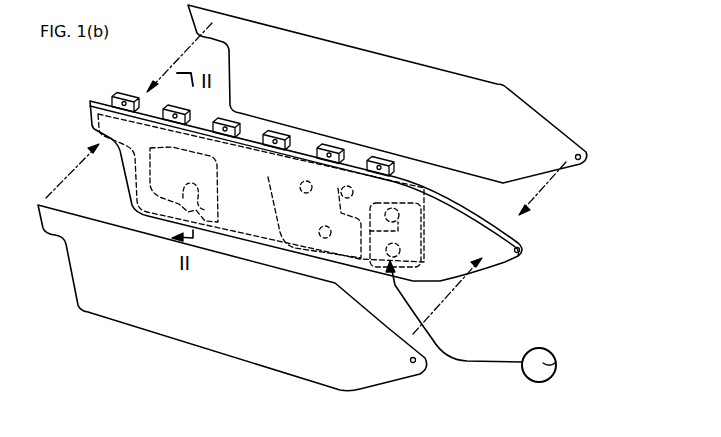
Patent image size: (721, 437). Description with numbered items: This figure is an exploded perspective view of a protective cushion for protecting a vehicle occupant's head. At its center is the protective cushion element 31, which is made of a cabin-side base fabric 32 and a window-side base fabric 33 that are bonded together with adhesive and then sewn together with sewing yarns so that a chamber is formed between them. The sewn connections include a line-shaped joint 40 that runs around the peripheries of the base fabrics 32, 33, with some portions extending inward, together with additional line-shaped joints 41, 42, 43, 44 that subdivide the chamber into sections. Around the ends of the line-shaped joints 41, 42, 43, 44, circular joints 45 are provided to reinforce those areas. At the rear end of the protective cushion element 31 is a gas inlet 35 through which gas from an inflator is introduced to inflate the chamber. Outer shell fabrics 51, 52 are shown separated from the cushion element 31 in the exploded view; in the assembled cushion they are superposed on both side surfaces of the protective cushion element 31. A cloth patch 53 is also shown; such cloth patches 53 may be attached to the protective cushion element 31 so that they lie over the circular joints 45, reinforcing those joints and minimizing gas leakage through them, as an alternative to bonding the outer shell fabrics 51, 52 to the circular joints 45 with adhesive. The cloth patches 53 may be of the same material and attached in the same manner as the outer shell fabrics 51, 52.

The protective cushion element 31 is at (482, 270).
The cabin-side base fabric 32 is at (500, 258).
The window-side base fabric 33 is at (525, 234).
The gas inlet 35 is at (90, 110).
The line-shaped joint 40 is at (134, 173).
The line-shaped joint 41 is at (184, 184).
The line-shaped joint 42 is at (307, 193).
The line-shaped joint 43 is at (344, 198).
The line-shaped joint 44 is at (393, 233).
The circular joint 45 is at (202, 204).
The outer shell fabric 51 is at (255, 345).
The outer shell fabric 52 is at (481, 96).
The cloth patch 53 is at (563, 367).